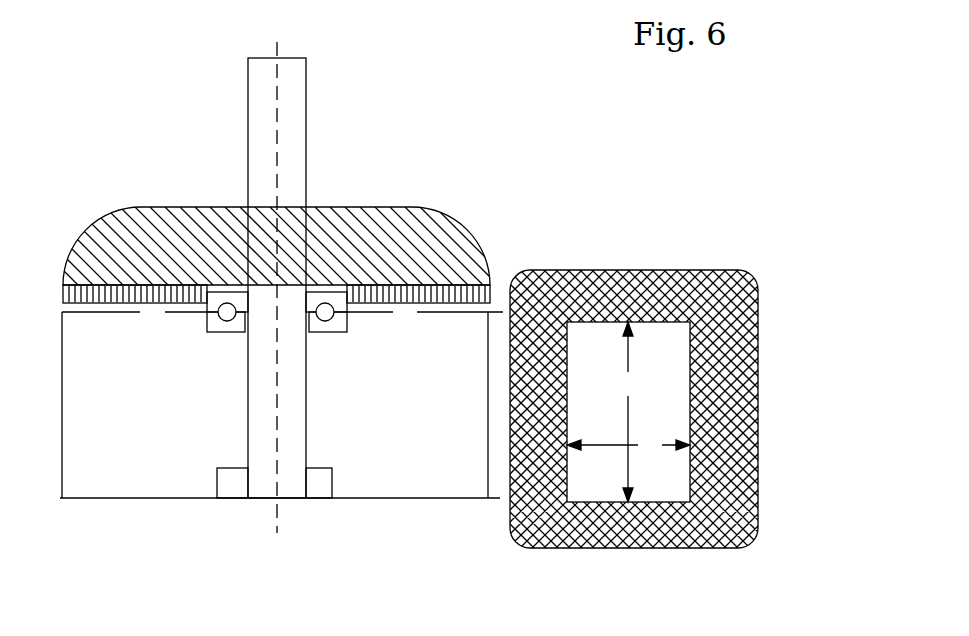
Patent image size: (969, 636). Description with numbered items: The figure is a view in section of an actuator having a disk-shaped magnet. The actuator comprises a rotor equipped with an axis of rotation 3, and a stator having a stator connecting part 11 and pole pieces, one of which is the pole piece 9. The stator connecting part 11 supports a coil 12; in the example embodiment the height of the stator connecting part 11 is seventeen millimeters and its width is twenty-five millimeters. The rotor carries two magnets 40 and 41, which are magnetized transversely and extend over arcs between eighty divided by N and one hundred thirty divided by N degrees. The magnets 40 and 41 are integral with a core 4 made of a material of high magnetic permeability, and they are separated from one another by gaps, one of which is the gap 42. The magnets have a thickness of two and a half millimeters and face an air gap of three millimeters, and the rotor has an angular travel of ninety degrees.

The axis of rotation 3 is at (267, 138).
The core 4 is at (137, 207).
The magnet 40 is at (396, 300).
The magnet 41 is at (64, 287).
The pole piece 9 is at (450, 500).
The coil 12 is at (550, 270).
The stator connecting part 11 is at (670, 392).
The gap 42 is at (124, 626).